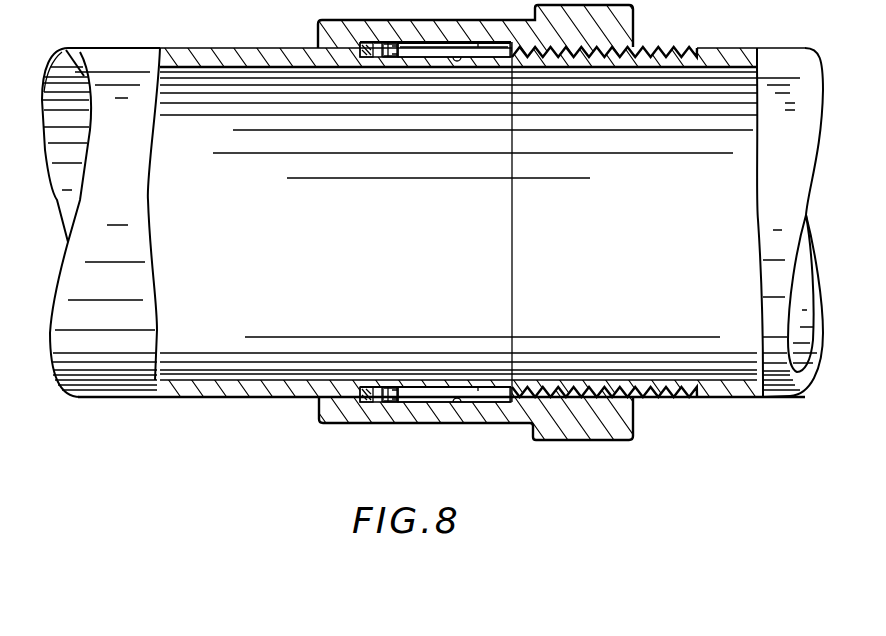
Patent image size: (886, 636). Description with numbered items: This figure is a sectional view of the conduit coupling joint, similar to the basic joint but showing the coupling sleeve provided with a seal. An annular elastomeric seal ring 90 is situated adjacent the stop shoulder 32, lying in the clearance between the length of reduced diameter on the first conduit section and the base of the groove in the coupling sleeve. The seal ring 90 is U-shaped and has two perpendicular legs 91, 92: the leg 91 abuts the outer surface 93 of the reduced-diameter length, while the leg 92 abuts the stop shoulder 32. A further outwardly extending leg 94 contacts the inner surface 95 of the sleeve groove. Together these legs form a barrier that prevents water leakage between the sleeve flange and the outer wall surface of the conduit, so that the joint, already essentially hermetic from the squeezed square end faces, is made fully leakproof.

The stop shoulder 32 is at (376, 390).
The annular elastomeric seal ring 90 is at (415, 403).
The leg 91 is at (393, 388).
The leg 92 is at (373, 406).
The outer surface 93 is at (480, 390).
The outwardly extending leg 94 is at (393, 403).
The inner surface 95 is at (459, 404).